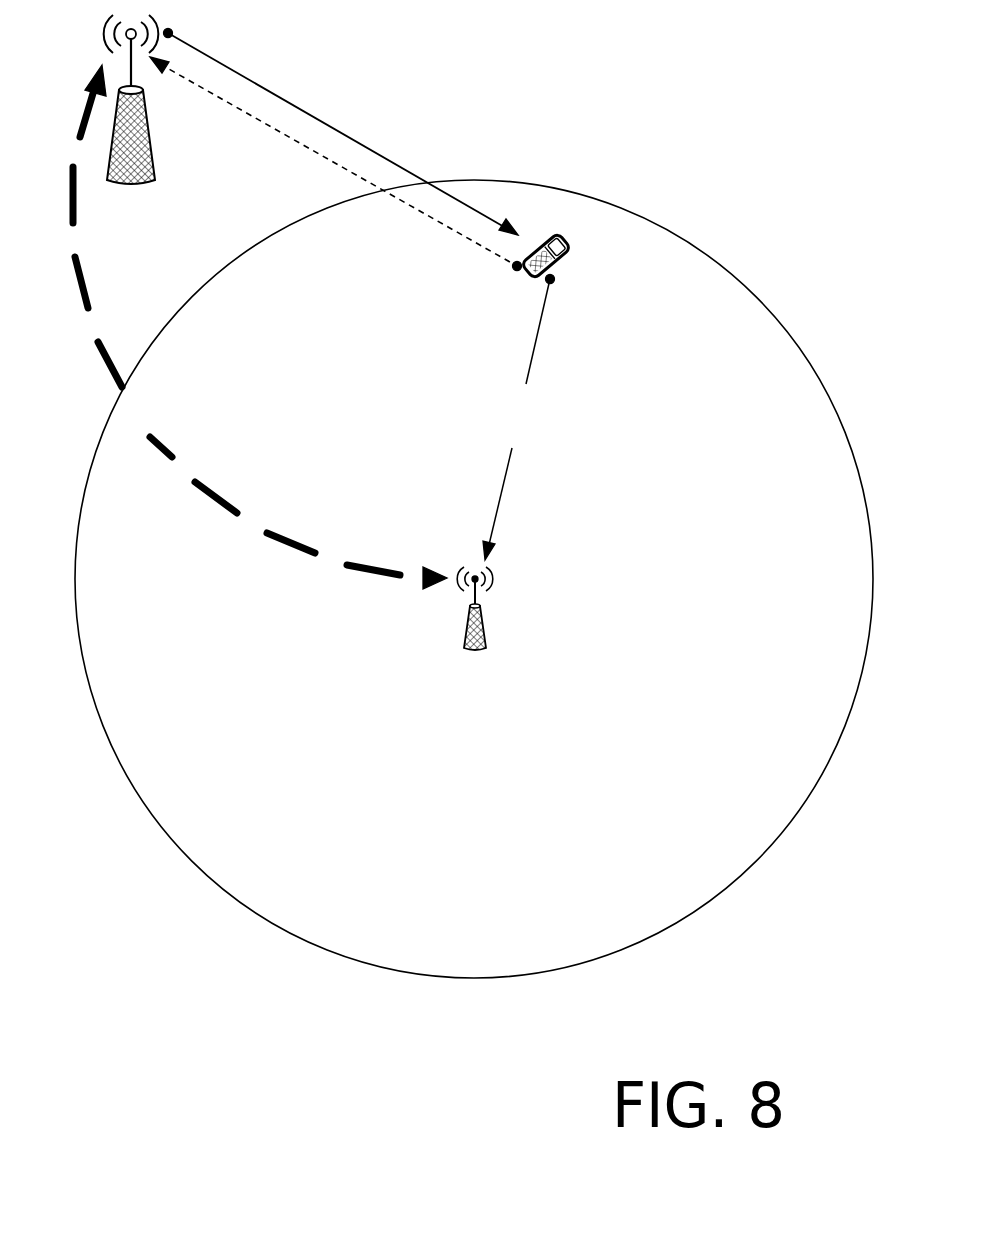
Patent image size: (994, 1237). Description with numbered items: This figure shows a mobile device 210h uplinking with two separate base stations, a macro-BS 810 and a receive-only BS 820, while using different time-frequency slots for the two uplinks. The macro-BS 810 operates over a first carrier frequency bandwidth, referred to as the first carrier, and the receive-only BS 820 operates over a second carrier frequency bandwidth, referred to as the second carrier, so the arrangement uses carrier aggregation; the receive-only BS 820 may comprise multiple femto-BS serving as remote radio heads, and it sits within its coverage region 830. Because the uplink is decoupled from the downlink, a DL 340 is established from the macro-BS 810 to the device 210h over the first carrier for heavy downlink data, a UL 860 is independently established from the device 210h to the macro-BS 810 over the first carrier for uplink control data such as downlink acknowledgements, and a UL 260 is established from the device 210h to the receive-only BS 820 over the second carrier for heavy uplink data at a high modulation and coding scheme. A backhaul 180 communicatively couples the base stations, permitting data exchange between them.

The macro-BS 810 is at (126, 34).
The receive-only BS 820 is at (472, 579).
The coverage area of second base station 830 is at (764, 343).
The mobile device 210h is at (563, 257).
The DL 340 is at (341, 132).
The UL 860 is at (333, 161).
The UL 260 is at (516, 419).
The backhaul 180 is at (260, 327).